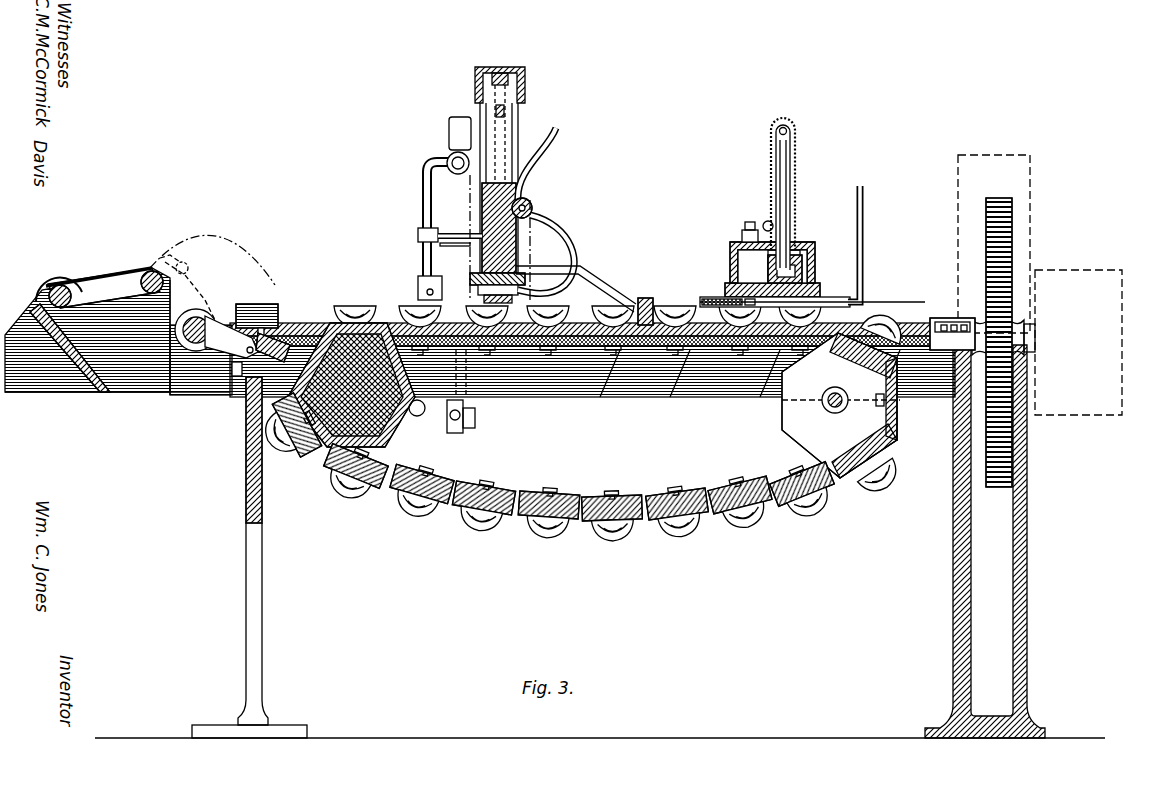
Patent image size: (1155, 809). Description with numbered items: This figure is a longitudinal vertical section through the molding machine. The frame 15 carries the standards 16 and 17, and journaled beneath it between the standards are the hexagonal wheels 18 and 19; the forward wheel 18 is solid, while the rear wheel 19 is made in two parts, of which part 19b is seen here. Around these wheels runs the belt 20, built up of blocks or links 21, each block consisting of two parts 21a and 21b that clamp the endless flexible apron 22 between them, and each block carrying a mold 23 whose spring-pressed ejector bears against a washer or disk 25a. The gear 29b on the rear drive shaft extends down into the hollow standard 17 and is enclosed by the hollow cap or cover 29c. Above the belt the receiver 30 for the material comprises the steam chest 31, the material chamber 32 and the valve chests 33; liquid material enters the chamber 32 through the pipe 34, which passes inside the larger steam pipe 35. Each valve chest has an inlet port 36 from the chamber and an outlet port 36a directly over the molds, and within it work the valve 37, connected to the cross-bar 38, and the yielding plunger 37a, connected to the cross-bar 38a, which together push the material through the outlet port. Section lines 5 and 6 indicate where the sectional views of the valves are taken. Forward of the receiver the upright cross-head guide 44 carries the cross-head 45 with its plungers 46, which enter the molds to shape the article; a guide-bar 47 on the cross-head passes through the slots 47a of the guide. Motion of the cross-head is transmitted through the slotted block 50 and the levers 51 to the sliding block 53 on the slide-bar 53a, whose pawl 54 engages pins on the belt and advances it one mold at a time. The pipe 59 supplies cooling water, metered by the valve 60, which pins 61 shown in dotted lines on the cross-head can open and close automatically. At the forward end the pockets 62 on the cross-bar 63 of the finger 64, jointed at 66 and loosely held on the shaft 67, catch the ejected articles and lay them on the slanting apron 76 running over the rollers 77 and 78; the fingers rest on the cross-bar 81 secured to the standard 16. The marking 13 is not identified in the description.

The section line 5 is at (804, 297).
The section line 6 is at (752, 228).
The conveyor frame 13 is at (525, 372).
The frame 15 is at (572, 337).
The standard 16 is at (253, 612).
The standard 17 is at (955, 542).
The forward hexagonal wheel 18 is at (351, 385).
The rear hexagonal wheel 19 is at (50, 282).
The rear wheel part 19b is at (856, 360).
The belt 20 is at (580, 372).
The block or link 21 is at (502, 497).
The block part 21a is at (568, 495).
The block part 21b is at (583, 520).
The endless flexible apron 22 is at (522, 520).
The mold 23 is at (408, 513).
The washer or disk 25a is at (440, 462).
The gear 29b is at (1012, 232).
The hollow cap or cover 29c is at (998, 160).
The receiver 30 is at (730, 262).
The steam chest 31 is at (742, 254).
The material chamber 32 is at (808, 252).
The valve chests 33 is at (270, 428).
The pipe 34 is at (790, 150).
The steam pipe 35 is at (771, 136).
The inlet port 36 is at (806, 272).
The outlet port 36a is at (720, 372).
The valve or plunger 37 is at (848, 302).
The plunger 37a is at (716, 299).
The cross-bar 38 is at (866, 297).
The cross-bar 38a is at (722, 295).
The cross-head guide 44 is at (524, 95).
The cross-head 45 is at (543, 211).
The plungers 46 is at (562, 272).
The guide-bar 47 is at (505, 150).
The slots 47a is at (503, 80).
The slotted block 50 is at (460, 432).
The levers 51 is at (418, 302).
The sliding block 53 is at (596, 290).
The slide-bar 53a is at (680, 372).
The pawl 54 is at (648, 298).
The pipe 59 is at (422, 200).
The valve 60 is at (418, 240).
The projections or pins 61 is at (470, 241).
The pockets 62 is at (282, 338).
The cross-bar 63 is at (262, 312).
The finger 64 is at (231, 337).
The joint 66 is at (262, 328).
The shaft 67 is at (204, 318).
The apron 76 is at (100, 280).
The roller 77 is at (152, 268).
The roller 78 is at (70, 280).
The cross-bar 81 is at (236, 372).